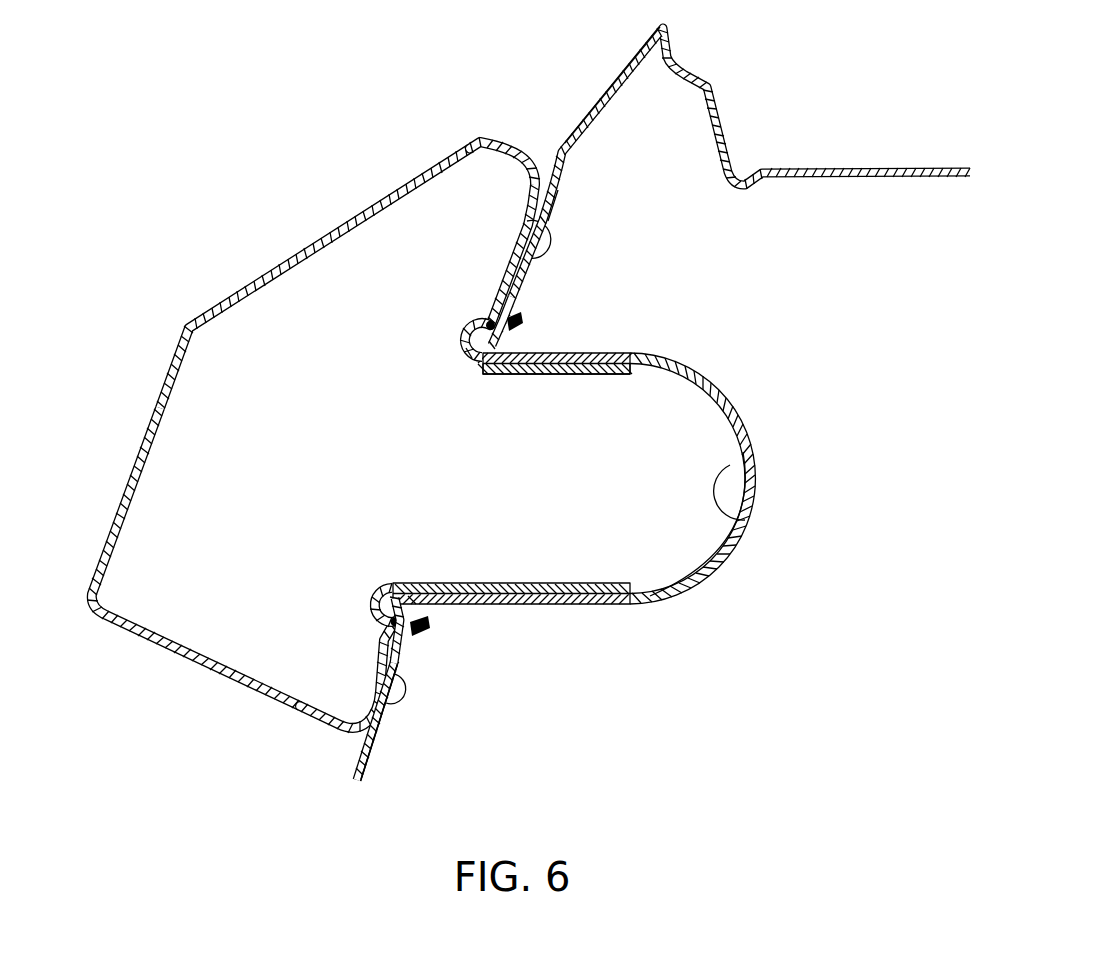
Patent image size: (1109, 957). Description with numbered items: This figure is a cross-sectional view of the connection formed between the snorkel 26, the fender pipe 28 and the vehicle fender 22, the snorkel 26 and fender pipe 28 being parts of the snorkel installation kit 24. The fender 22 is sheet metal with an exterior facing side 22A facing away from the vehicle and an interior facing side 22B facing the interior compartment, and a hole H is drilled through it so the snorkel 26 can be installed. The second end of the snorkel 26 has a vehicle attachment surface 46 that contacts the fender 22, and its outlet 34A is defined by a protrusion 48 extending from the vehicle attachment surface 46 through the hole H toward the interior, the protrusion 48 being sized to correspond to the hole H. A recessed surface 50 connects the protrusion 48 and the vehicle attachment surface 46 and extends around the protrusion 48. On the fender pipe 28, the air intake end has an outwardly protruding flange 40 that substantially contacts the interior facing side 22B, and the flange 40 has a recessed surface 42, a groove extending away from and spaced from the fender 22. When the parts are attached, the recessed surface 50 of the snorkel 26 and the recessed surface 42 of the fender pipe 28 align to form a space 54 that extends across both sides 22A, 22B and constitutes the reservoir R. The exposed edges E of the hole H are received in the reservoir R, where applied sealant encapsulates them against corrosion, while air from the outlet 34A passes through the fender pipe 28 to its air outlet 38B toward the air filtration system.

The vehicle fender 22 is at (728, 109).
The exterior facing side 22A is at (557, 153).
The interior facing side 22B is at (552, 195).
The snorkel installation kit 24 is at (333, 223).
The snorkel 26 is at (217, 245).
The fender pipe 28 is at (702, 362).
The outlet 34A is at (597, 376).
The air outlet 38B is at (747, 517).
The outwardly protruding flange 40 is at (523, 300).
The recessed surface 42 is at (510, 327).
The vehicle attachment surface 46 is at (515, 252).
The protrusion 48 is at (552, 376).
The recessed surface 50 is at (497, 313).
The space 54 is at (467, 352).
The edges E is at (483, 368).
The reservoir R is at (500, 355).
The hole H is at (425, 477).